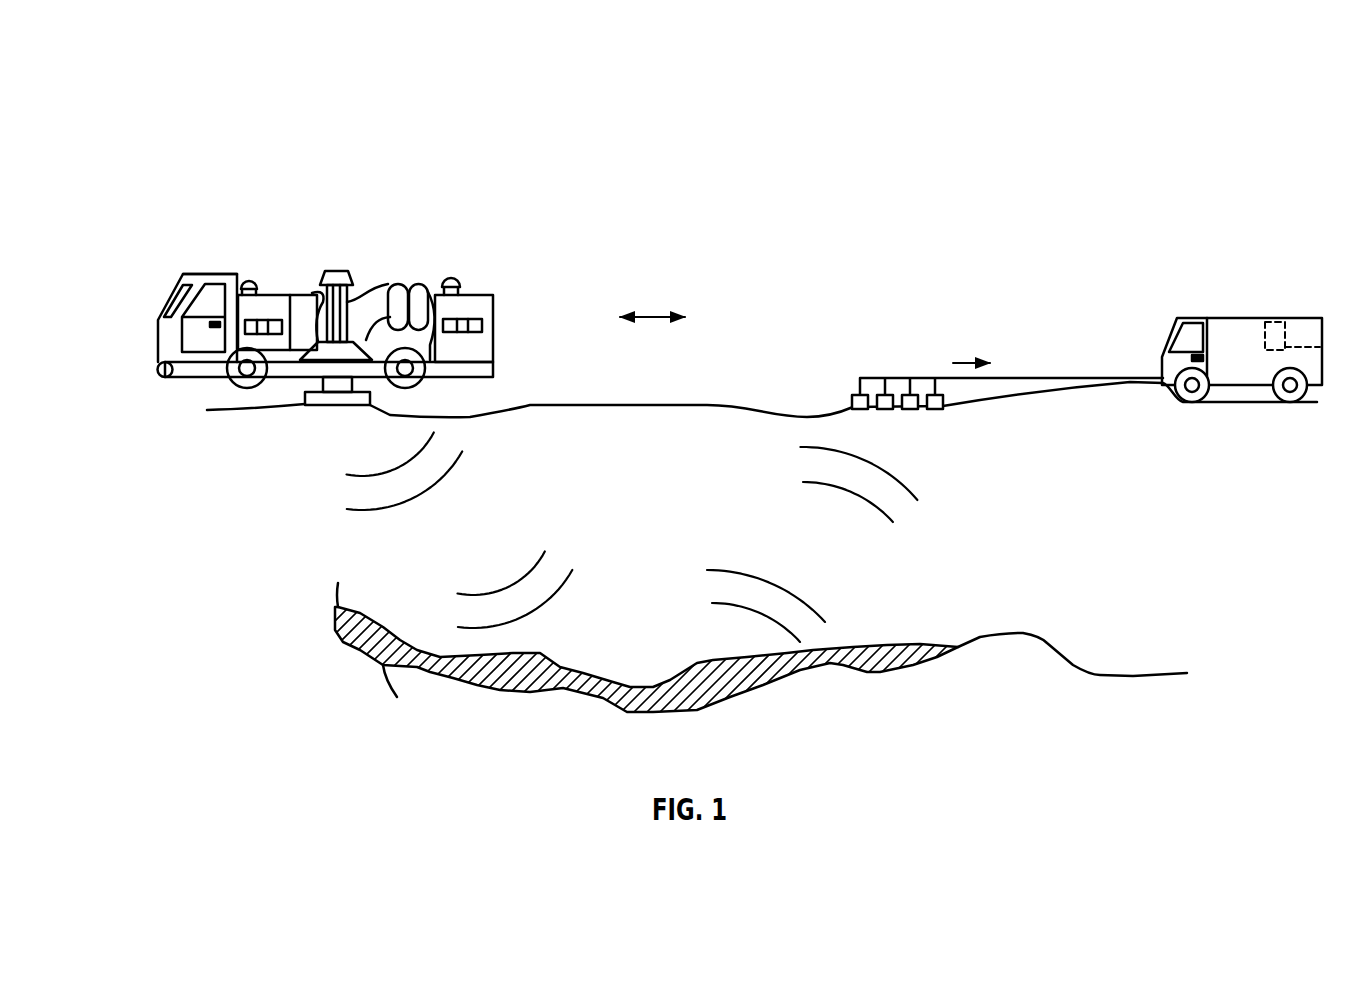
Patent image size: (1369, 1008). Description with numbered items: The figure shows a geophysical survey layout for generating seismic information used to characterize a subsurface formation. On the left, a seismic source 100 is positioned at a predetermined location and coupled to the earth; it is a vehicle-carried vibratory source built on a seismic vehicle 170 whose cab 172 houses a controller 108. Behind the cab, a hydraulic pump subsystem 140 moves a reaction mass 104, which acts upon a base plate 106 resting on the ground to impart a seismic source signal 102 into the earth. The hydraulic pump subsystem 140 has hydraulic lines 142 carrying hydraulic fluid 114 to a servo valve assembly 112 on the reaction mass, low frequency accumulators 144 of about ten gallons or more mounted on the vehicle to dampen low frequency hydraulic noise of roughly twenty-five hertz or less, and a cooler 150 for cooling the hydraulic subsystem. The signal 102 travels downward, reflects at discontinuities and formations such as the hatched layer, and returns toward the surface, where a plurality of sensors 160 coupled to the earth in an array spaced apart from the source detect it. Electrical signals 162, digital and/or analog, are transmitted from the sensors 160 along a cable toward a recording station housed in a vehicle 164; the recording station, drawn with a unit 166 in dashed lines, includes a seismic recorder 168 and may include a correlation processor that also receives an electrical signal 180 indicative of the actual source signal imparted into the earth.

The seismic source 100 is at (143, 110).
The seismic source signal 102 is at (266, 520).
The reaction mass 104 is at (337, 270).
The base plate 106 is at (337, 405).
The controller 108 is at (224, 278).
The servo valve assembly 112 is at (298, 293).
The hydraulic fluid 114 is at (408, 307).
The hydraulic pump subsystem 140 is at (275, 295).
The hydraulic lines 142 is at (397, 283).
The low frequency accumulators 144 is at (430, 297).
The cooler 150 is at (492, 300).
The sensors 160 is at (935, 410).
The electrical signals 162 is at (972, 360).
The recording truck 164 is at (1173, 330).
The recording system 166 is at (1273, 327).
The seismic recorder 168 is at (1303, 327).
The seismic vehicle 170 is at (158, 320).
The cab 172 is at (192, 272).
The electrical signal 180 is at (653, 315).